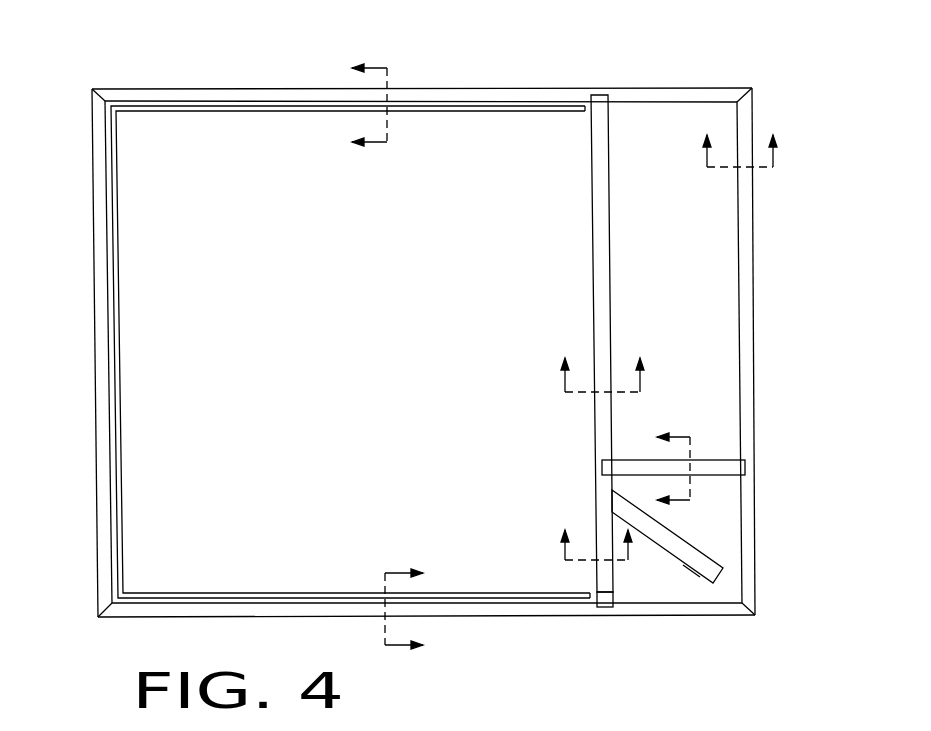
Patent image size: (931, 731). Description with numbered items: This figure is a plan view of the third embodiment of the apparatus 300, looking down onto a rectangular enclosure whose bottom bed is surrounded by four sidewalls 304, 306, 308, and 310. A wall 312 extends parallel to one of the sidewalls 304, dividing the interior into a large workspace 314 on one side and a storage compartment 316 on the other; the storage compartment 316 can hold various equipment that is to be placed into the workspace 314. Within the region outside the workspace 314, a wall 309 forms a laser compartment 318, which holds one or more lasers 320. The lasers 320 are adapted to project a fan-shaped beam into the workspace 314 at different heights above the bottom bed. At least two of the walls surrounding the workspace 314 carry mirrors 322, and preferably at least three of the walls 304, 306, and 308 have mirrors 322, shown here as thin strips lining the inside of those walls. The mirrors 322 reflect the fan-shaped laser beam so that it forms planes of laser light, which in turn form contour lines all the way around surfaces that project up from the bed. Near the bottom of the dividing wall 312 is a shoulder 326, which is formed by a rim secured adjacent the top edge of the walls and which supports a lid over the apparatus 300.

The apparatus 300 is at (471, 60).
The sidewall 304 is at (507, 610).
The sidewall 306 is at (100, 497).
The sidewall 308 is at (272, 90).
The wall 309 is at (729, 462).
The sidewall 310 is at (751, 268).
The wall 312 is at (603, 283).
The workspace 314 is at (355, 355).
The storage compartment 316 is at (700, 224).
The laser compartment 318 is at (712, 530).
The laser 320 is at (683, 565).
The mirror 322 is at (208, 108).
The shoulder 326 is at (597, 586).